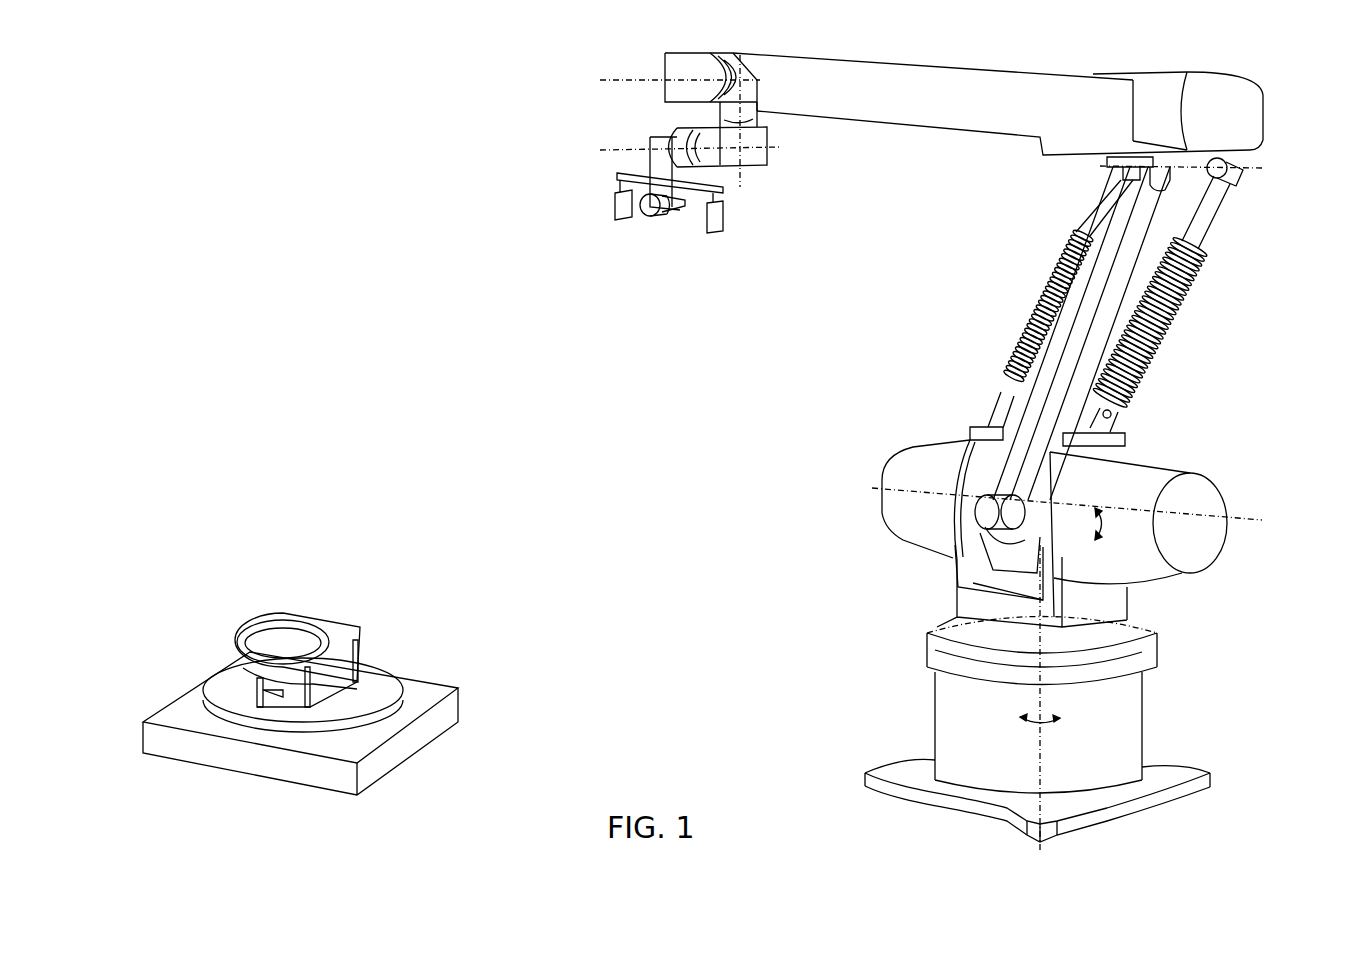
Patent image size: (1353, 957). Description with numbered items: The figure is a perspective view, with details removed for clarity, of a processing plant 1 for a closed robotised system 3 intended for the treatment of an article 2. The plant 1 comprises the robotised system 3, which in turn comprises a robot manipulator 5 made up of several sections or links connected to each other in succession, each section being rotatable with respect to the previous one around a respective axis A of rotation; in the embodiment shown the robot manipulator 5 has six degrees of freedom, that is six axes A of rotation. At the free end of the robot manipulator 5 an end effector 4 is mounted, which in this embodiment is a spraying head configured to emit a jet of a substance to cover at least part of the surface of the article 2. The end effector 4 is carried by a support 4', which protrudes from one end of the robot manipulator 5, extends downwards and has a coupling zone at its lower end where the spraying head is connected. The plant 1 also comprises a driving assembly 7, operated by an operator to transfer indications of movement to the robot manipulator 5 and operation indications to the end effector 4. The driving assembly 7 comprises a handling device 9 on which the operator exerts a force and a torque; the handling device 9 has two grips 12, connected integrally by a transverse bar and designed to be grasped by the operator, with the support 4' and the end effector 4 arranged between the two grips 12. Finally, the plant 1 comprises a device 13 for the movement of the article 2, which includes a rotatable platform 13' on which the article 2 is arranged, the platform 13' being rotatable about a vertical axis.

The processing plant 1 is at (490, 122).
The article 2 is at (283, 616).
The robotised system 3 is at (1246, 63).
The end effector 4 is at (661, 205).
The support 4' is at (669, 239).
The robot manipulator 5 is at (957, 117).
The driving assembly 7 is at (693, 286).
The handling device 9 is at (713, 245).
The grip 12 is at (613, 210).
The device for the movement of the article 13 is at (317, 697).
The rotatable platform 13' is at (359, 711).
The axis of rotation A is at (961, 461).